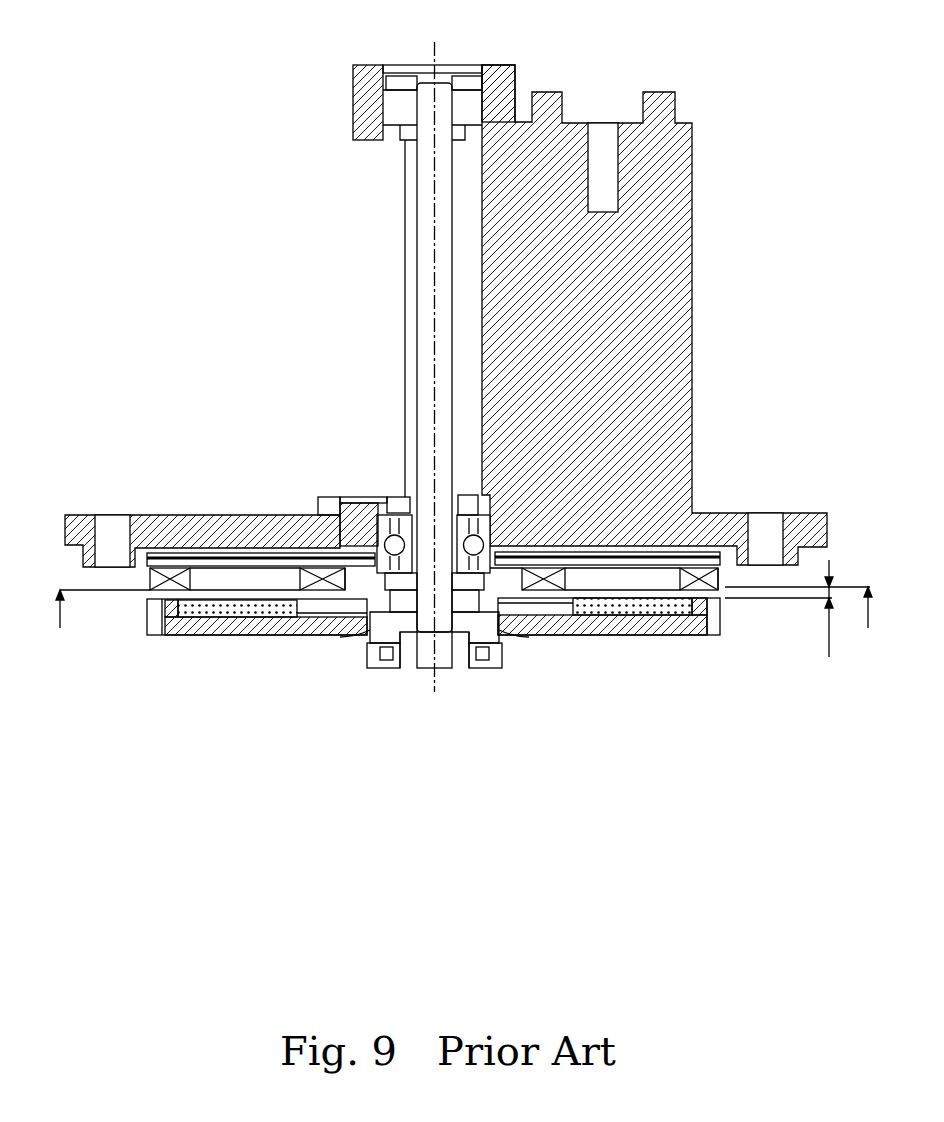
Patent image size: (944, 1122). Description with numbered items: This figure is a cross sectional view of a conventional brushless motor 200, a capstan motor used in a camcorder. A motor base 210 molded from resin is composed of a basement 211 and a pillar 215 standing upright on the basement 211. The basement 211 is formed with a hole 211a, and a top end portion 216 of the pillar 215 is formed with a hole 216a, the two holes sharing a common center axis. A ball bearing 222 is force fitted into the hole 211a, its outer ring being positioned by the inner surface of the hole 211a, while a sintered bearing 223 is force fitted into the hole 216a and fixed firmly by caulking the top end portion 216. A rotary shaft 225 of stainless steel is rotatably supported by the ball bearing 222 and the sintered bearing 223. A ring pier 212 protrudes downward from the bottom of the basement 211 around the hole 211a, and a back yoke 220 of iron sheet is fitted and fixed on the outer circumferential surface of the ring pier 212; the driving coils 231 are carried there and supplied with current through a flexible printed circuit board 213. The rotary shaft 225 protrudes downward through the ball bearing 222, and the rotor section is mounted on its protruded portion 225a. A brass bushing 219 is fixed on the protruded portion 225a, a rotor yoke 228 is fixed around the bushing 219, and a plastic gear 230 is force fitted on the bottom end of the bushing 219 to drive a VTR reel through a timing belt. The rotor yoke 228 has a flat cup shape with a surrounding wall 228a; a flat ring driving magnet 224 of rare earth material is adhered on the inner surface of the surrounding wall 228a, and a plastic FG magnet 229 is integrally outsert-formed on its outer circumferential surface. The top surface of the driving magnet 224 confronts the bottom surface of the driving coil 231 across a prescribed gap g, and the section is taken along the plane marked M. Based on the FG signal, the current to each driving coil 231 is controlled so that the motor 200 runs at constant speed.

The brushless motor 200 is at (805, 105).
The motor base 210 is at (682, 200).
The basement 211 is at (303, 524).
The hole 211a is at (473, 515).
The ring pier 212 is at (372, 590).
The flexible printed circuit board 213 is at (720, 562).
The pillar 215 is at (516, 78).
The top end portion 216 is at (352, 96).
The hole 216a is at (402, 93).
The bushing 219 is at (478, 630).
The back yoke 220 is at (198, 557).
The ball bearing 222 is at (402, 515).
The sintered bearing 223 is at (393, 118).
The driving magnet 224 is at (638, 618).
The rotary shaft 225 is at (430, 288).
The protruded portion 225a is at (433, 640).
The rotor yoke 228 is at (240, 637).
The surrounding wall 228a is at (178, 635).
The FG magnet 229 is at (147, 622).
The gear 230 is at (367, 657).
The driving coil 231 is at (150, 582).
The section line M is at (464, 622).
The gap g is at (779, 608).